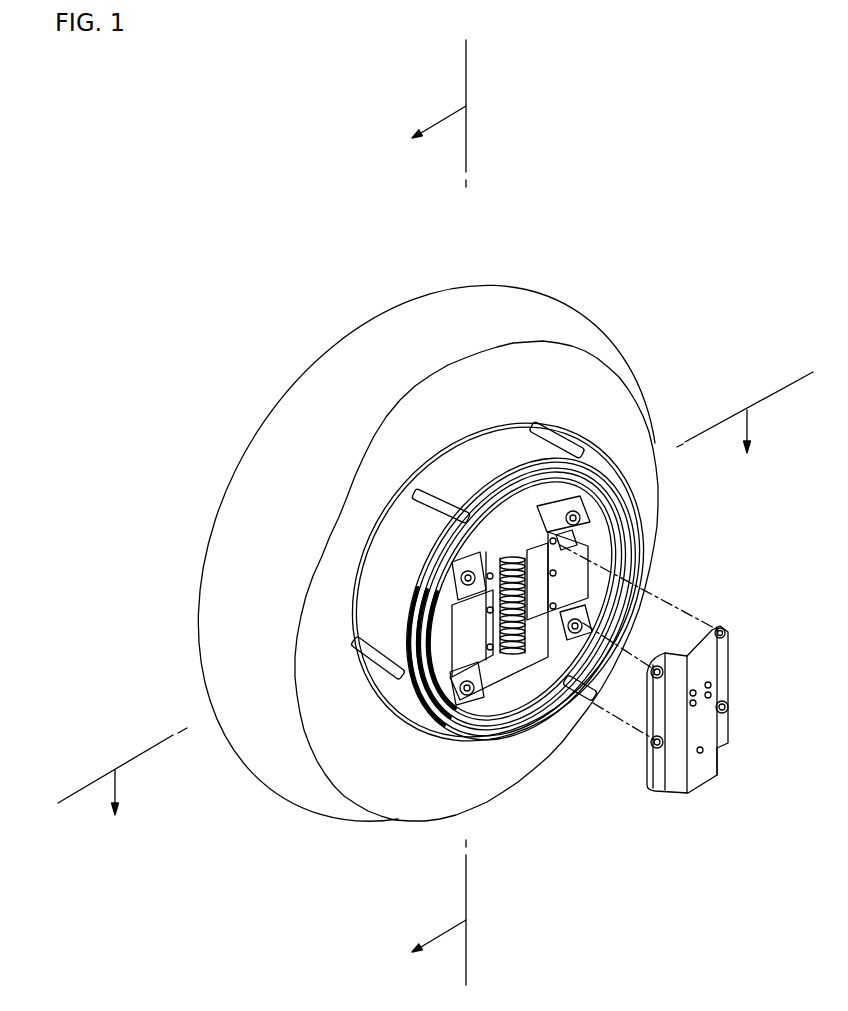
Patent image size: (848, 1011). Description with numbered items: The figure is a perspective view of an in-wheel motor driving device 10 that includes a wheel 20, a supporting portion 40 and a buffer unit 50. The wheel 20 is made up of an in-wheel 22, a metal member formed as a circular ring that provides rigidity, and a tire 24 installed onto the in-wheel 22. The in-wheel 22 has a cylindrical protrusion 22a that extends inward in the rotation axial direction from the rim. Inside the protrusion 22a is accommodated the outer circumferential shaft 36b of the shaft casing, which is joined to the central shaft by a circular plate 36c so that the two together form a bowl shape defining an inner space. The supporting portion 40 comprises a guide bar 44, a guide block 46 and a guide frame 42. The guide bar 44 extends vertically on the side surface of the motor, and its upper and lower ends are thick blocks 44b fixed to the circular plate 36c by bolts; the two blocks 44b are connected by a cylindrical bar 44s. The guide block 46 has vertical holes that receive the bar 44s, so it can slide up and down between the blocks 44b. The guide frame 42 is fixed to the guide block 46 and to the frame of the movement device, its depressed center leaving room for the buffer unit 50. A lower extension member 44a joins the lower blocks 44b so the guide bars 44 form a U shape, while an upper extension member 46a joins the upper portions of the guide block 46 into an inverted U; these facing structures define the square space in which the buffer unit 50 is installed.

The in-wheel motor driving device 10 is at (272, 138).
The wheel 20 is at (505, 272).
The in-wheel 22 is at (505, 452).
The protrusion 22a is at (470, 717).
The tire 24 is at (542, 318).
The outer circumferential shaft 36b is at (521, 671).
The circular plate 36c is at (452, 738).
The supporting portion 40 is at (608, 591).
The guide frame 42 is at (710, 668).
The guide bar 44 is at (581, 515).
The lower extension member 44a is at (527, 645).
The block 44b is at (583, 628).
The bar 44s is at (572, 543).
The guide block 46 is at (577, 575).
The upper extension member 46a is at (507, 537).
The buffer unit 50 is at (499, 680).